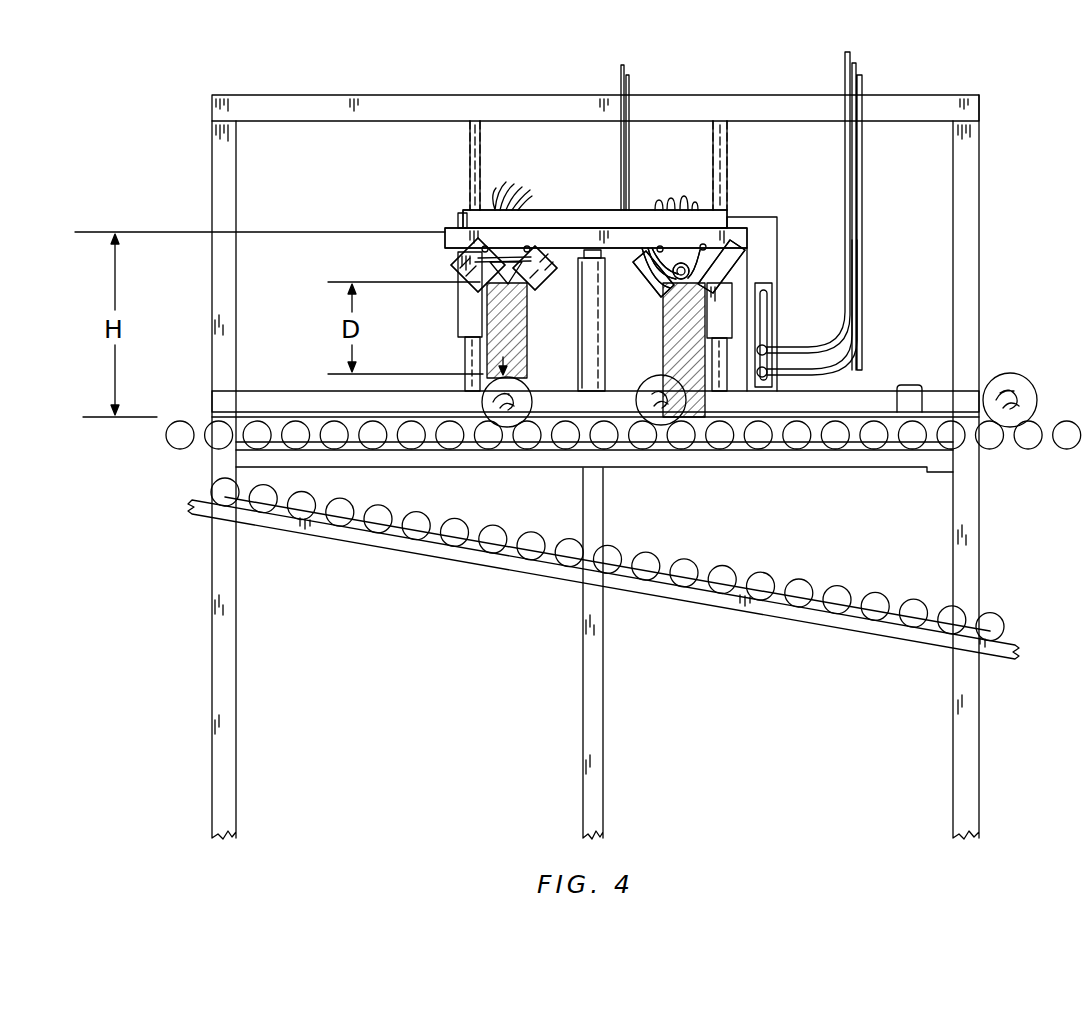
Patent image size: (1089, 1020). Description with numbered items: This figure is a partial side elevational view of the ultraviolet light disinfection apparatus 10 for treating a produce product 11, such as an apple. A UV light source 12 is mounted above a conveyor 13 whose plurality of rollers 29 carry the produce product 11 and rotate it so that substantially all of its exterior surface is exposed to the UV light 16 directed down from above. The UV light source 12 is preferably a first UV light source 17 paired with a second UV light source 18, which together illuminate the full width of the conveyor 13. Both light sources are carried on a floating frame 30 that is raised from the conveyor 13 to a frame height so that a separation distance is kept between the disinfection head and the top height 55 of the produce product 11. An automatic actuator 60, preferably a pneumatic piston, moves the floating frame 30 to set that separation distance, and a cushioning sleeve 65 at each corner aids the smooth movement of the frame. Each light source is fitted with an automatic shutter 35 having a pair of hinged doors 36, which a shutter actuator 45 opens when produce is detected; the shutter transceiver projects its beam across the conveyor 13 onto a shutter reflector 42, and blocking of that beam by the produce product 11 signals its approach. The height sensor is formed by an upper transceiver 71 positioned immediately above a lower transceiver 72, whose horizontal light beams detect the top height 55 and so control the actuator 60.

The ultraviolet light disinfection apparatus 10 is at (172, 140).
The produce product 11 is at (1014, 385).
The ultraviolet light source 12 is at (362, 210).
The conveyor 13 is at (830, 484).
The UV light 16 is at (519, 346).
The first UV light source 17 is at (540, 232).
The second UV light source 18 is at (702, 247).
The rollers 29 is at (1028, 442).
The floating frame 30 is at (536, 220).
The automatic shutter 35 is at (457, 250).
The doors 36 is at (462, 260).
The shutter reflector 42 is at (910, 395).
The shutter actuator 45 is at (507, 250).
The top height 55 is at (466, 352).
The automatic actuator 60 is at (590, 378).
The cushioning sleeve 65 is at (467, 305).
The upper transceiver 71 is at (764, 348).
The lower transceiver 72 is at (767, 371).